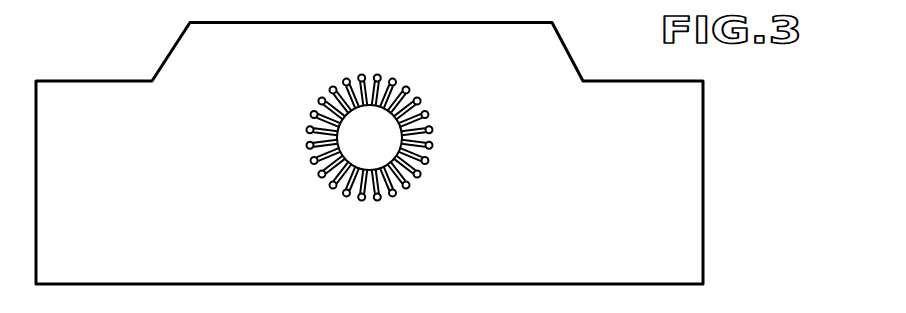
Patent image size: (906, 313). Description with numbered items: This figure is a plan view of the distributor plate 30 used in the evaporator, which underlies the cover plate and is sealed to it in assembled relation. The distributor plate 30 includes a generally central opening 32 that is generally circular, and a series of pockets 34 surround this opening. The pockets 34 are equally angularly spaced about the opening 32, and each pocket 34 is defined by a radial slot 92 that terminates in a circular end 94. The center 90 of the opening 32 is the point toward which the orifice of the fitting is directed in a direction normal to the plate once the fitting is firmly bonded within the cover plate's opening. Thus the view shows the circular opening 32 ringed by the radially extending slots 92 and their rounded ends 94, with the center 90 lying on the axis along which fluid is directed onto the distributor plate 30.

The distributor plate 30 is at (634, 99).
The central opening 32 is at (379, 144).
The pockets 34 is at (433, 141).
The center 90 is at (370, 141).
The radial slot 92 is at (316, 170).
The circular end 94 is at (339, 190).